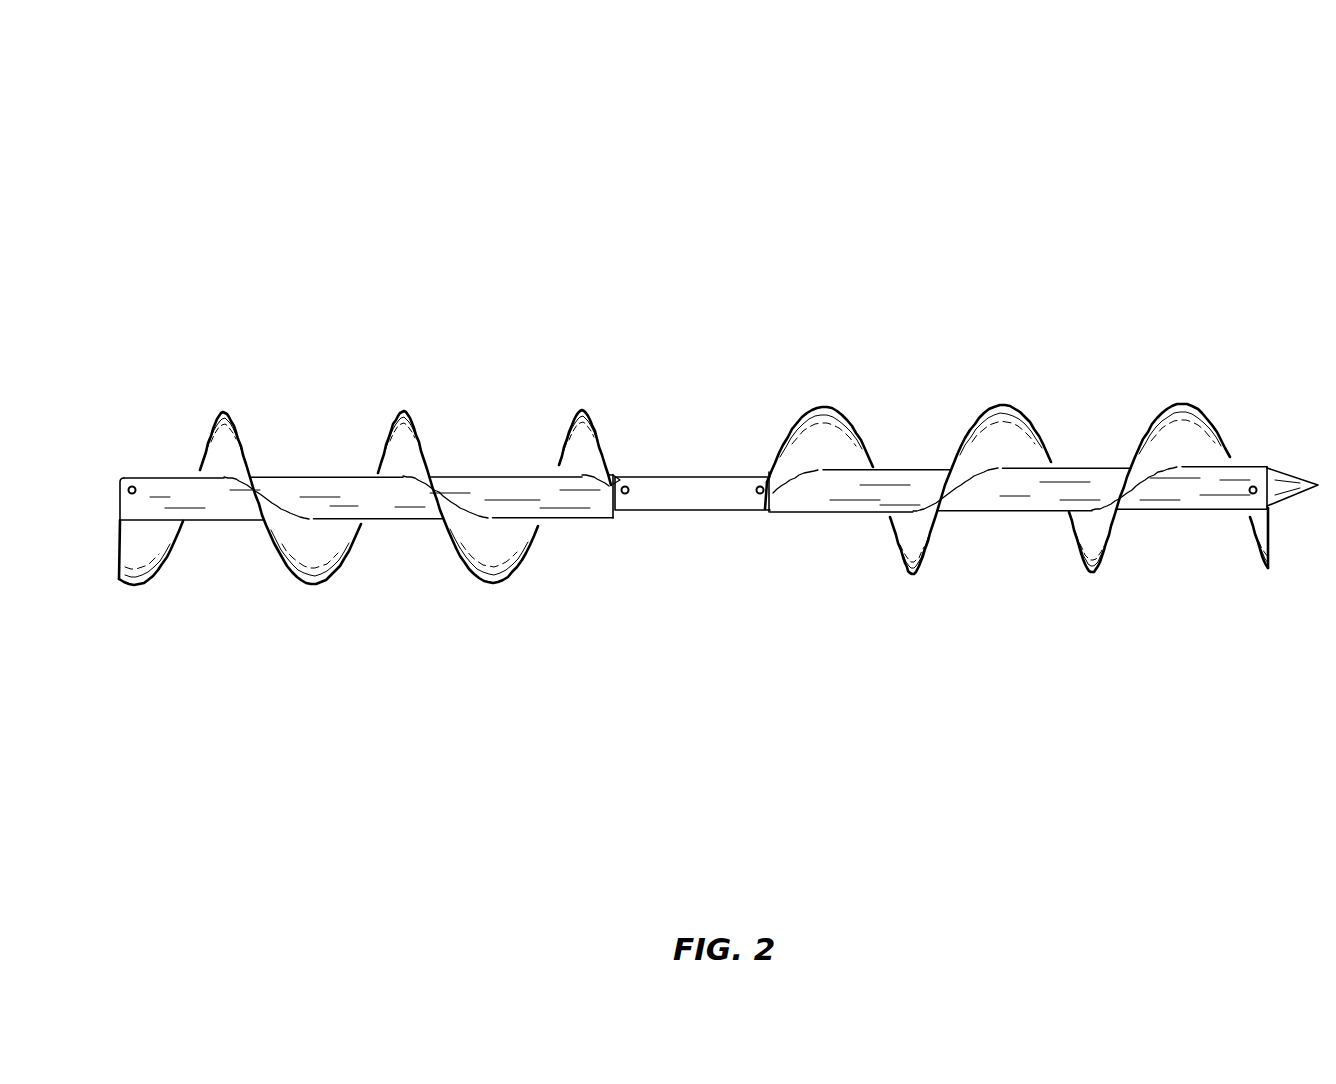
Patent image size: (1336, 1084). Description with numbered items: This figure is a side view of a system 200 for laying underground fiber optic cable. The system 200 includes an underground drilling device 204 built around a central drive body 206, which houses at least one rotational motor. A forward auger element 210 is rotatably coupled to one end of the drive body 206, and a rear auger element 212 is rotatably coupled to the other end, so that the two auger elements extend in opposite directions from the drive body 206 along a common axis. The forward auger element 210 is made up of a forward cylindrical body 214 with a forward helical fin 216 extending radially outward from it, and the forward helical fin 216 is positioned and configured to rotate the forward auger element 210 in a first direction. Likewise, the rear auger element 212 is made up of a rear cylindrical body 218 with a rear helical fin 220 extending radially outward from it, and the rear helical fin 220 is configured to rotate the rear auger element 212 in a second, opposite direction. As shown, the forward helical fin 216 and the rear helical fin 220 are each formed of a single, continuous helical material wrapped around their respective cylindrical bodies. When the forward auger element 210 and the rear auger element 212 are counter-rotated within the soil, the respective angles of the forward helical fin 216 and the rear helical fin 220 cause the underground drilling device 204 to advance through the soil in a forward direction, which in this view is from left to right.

The system 200 is at (152, 115).
The underground drilling device 204 is at (282, 234).
The drive body 206 is at (669, 428).
The forward auger element 210 is at (939, 358).
The rear auger element 212 is at (362, 358).
The forward cylindrical body 214 is at (1162, 510).
The forward helical fin 216 is at (917, 572).
The rear cylindrical body 218 is at (413, 521).
The rear helical fin 220 is at (488, 582).